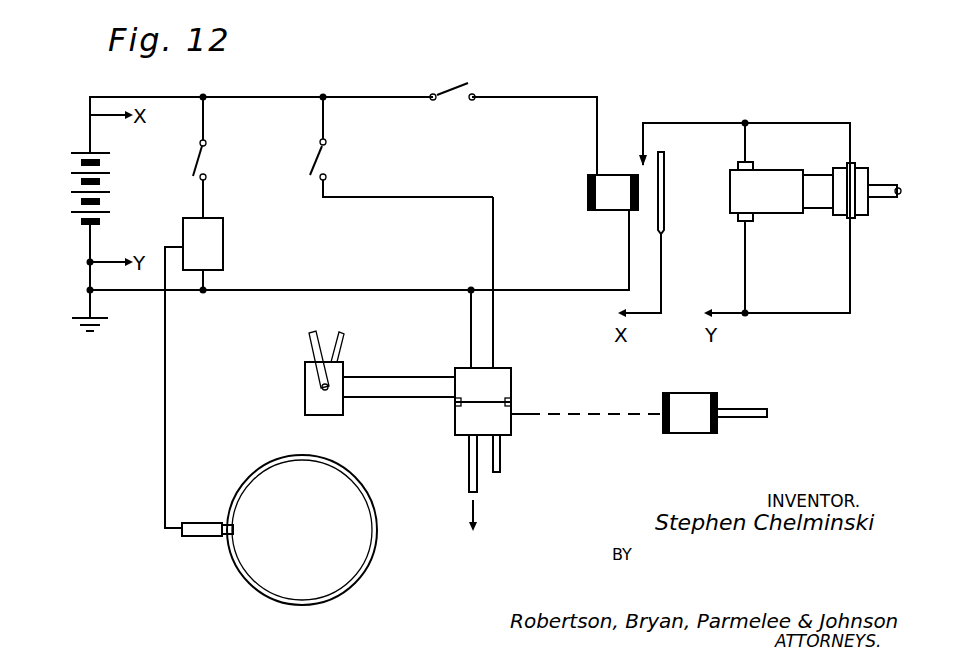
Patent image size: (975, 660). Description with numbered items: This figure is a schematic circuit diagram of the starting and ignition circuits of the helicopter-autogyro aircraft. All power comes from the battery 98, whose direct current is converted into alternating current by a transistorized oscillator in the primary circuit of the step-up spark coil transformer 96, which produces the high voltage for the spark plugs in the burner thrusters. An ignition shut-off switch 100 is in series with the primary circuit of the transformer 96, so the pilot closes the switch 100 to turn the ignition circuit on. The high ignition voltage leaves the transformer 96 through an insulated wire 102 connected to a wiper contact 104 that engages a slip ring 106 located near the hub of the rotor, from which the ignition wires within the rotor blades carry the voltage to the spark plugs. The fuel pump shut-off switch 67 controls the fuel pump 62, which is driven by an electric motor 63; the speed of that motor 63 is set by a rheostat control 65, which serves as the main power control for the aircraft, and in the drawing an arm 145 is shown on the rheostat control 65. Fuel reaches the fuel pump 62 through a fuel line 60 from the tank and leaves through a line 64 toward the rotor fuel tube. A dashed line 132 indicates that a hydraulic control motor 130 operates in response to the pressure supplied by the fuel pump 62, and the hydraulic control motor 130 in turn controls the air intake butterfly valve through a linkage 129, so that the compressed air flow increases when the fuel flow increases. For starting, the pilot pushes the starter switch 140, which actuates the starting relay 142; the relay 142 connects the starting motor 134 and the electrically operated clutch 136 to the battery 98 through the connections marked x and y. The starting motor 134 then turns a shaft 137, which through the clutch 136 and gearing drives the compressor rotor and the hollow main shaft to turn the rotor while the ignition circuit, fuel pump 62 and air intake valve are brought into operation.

The battery 98 is at (72, 168).
The ignition shut-off switch 100 is at (197, 163).
The step-up spark coil transformer 96 is at (227, 248).
The fuel pump shut-off switch 67 is at (315, 155).
The starter switch 140 is at (453, 85).
The starting relay 142 is at (588, 183).
The starting motor 134 is at (778, 170).
The electric clutch 136 is at (851, 165).
The shaft 137 is at (892, 198).
The insulated wire 102 is at (165, 362).
The rheostat control 65 is at (308, 343).
The lever arm 145 is at (345, 348).
The electric motor 63 is at (507, 367).
The fuel pump 62 is at (455, 418).
The line 64 is at (468, 470).
The fuel line 60 is at (500, 463).
The dashed line 132 is at (597, 417).
The hydraulic control motor 130 is at (702, 433).
The linkage 129 is at (743, 407).
The slip ring 106 is at (340, 467).
The wiper contact 104 is at (207, 536).